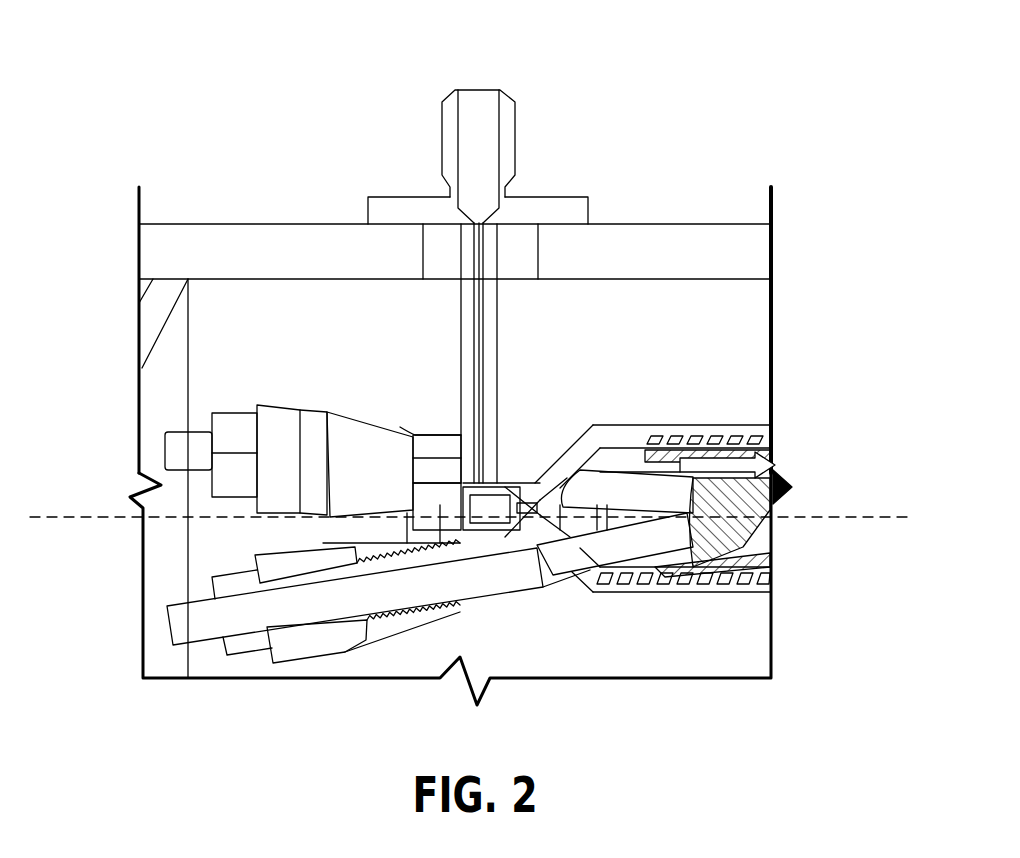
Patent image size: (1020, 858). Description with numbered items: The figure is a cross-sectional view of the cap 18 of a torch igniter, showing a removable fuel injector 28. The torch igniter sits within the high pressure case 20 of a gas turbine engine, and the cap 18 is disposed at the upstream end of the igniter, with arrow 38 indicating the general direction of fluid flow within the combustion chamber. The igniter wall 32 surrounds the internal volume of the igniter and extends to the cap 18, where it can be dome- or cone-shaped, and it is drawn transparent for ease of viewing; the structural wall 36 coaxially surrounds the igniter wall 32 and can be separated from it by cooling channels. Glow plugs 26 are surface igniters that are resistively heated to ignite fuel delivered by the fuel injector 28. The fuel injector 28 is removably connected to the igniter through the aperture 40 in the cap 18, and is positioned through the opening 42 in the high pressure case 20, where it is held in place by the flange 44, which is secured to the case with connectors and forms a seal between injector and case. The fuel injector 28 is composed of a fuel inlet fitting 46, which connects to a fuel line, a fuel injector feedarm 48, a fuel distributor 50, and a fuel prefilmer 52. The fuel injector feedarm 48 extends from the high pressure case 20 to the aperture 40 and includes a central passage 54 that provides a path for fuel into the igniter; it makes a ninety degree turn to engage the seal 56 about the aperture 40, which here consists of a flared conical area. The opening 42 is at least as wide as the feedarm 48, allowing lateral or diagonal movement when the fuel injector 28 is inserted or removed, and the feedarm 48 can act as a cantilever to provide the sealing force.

The cap 18 is at (437, 640).
The high pressure case 20 is at (240, 238).
The glow plugs 26 is at (165, 452).
The fuel injector 28 is at (492, 256).
The igniter wall 32 is at (776, 512).
The structural wall 36 is at (695, 585).
The arrow 38 is at (718, 447).
The aperture 40 is at (542, 534).
The opening 42 is at (420, 248).
The flange 44 is at (392, 217).
The fuel inlet fitting 46 is at (447, 155).
The fuel injector feedarm 48 is at (500, 350).
The fuel distributor 50 is at (518, 537).
The fuel prefilmer 52 is at (563, 497).
The central passage 54 is at (458, 374).
The seal 56 is at (547, 478).